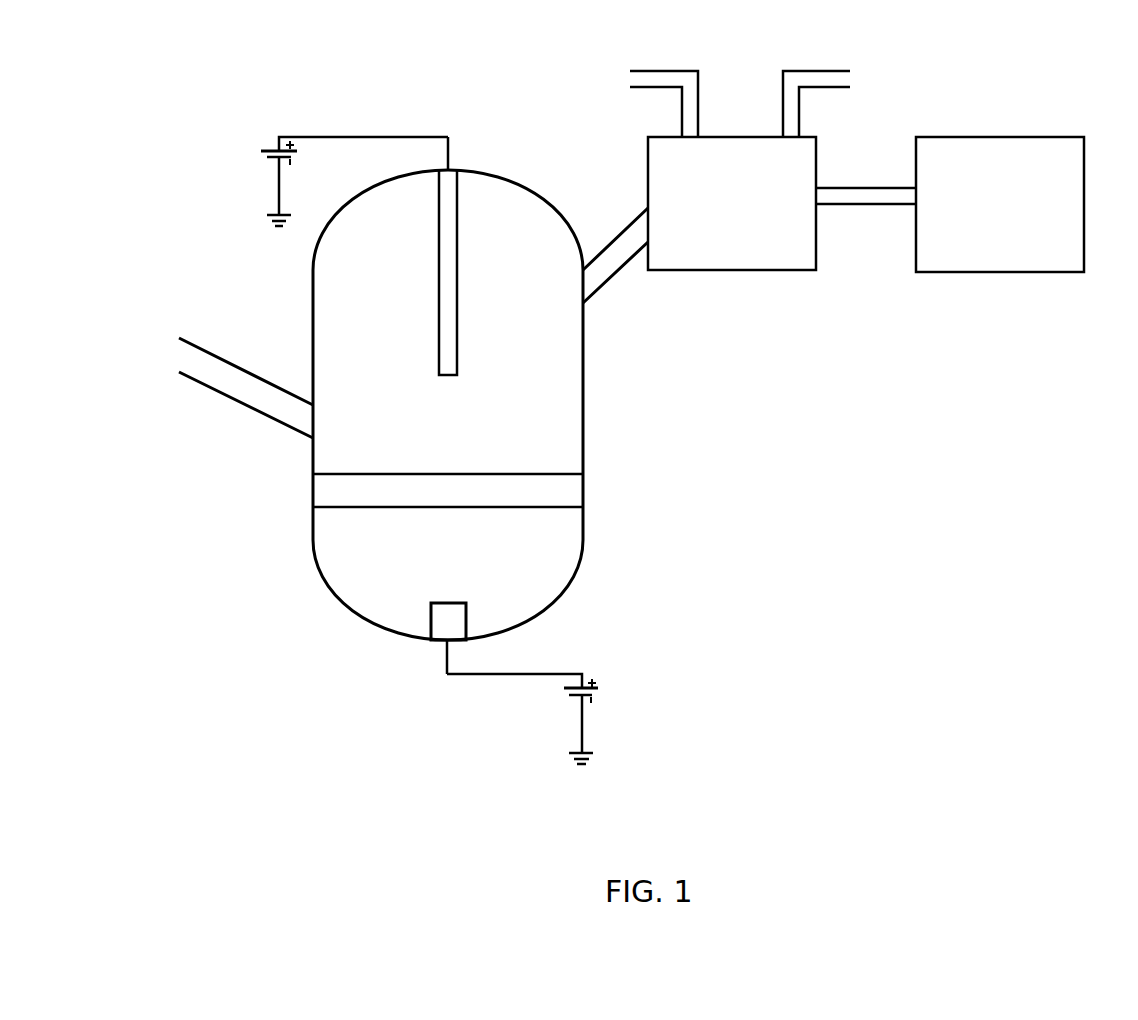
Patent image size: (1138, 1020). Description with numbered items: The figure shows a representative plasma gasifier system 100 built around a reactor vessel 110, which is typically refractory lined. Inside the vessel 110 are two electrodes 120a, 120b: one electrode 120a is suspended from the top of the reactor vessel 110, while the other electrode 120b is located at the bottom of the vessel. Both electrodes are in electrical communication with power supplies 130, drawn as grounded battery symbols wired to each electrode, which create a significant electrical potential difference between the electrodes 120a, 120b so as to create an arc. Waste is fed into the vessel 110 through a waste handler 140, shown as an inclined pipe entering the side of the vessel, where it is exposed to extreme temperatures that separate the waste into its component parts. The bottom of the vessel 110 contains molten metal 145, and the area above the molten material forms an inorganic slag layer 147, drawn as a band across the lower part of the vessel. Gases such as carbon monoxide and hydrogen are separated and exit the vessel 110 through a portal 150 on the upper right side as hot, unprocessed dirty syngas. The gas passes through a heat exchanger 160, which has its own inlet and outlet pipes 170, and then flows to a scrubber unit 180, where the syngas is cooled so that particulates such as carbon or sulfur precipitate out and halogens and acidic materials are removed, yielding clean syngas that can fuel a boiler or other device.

The plasma gasifier system 100 is at (243, 708).
The reactor vessel 110 is at (612, 435).
The electrode 120a is at (459, 184).
The electrode 120b is at (466, 620).
The power supply 130 is at (247, 160).
The waste handler 140 is at (240, 405).
The molten metal 145 is at (515, 558).
The inorganic slag layer 147 is at (448, 490).
The portal 150 is at (617, 273).
The heat exchanger 160 is at (732, 203).
The heat exchanger pipes 170 is at (817, 68).
The scrubber unit 180 is at (950, 204).